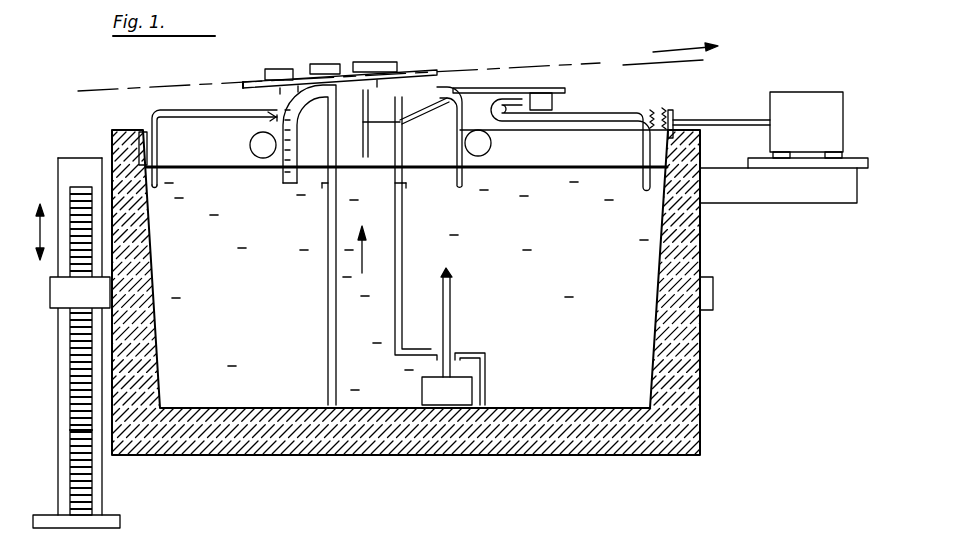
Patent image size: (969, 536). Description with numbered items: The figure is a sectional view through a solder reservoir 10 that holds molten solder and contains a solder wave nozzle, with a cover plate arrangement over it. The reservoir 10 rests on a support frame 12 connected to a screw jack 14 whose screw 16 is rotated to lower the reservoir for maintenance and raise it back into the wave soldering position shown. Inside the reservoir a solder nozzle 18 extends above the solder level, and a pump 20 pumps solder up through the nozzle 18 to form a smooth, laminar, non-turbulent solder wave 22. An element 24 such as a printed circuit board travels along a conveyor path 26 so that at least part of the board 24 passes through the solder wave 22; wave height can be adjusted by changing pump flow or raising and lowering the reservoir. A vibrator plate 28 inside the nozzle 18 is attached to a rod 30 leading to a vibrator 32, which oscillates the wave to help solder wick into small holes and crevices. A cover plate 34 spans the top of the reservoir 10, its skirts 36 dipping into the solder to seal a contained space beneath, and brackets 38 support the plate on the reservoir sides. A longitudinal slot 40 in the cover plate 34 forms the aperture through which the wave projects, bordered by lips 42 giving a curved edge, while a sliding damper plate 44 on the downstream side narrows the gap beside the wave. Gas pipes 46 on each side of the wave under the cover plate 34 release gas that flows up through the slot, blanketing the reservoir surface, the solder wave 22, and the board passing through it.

The solder reservoir 10 is at (689, 365).
The support frame 12 is at (713, 298).
The screw jack 14 is at (97, 462).
The screw 16 is at (88, 486).
The solder nozzle 18 is at (320, 184).
The pump 20 is at (460, 388).
The solder wave 22 is at (427, 93).
The element 24 is at (300, 83).
The conveyor path 26 is at (585, 63).
The vibrator plate 28 is at (370, 147).
The rod 30 is at (548, 131).
The vibrator 32 is at (806, 103).
The cover plate 34 is at (570, 113).
The skirts 36 is at (158, 160).
The brackets 38 is at (125, 128).
The longitudinal slot 40 is at (243, 84).
The lips 42 is at (278, 106).
The sliding damper plate 44 is at (517, 92).
The gas pipes 46 is at (252, 140).